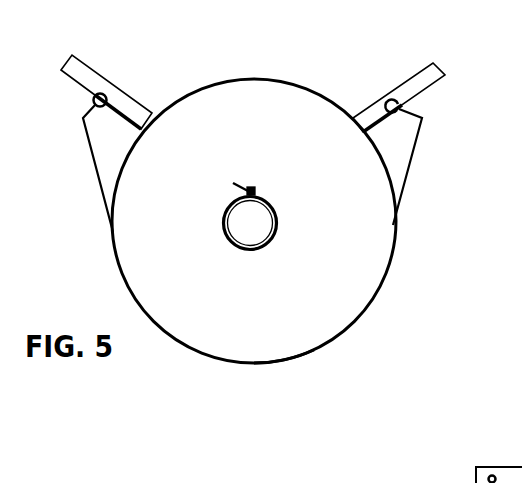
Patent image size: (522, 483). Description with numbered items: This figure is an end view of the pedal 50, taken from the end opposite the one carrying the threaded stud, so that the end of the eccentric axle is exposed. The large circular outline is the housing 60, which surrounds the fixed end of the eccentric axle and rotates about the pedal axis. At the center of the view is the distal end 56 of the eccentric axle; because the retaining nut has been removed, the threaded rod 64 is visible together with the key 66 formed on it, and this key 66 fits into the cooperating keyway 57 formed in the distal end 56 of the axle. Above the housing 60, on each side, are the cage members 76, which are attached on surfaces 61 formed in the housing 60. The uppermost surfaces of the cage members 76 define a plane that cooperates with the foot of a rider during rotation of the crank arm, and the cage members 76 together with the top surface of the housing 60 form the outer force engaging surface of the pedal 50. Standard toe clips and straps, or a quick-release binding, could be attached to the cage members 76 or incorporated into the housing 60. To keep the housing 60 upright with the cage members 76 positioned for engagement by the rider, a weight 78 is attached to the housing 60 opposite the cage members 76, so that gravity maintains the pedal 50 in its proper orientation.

The pedal 50 is at (324, 60).
The distal end 56 is at (353, 267).
The keyway 57 is at (256, 189).
The housing 60 is at (407, 151).
The surfaces 61 is at (96, 98).
The threaded rod 64 is at (278, 218).
The key 66 is at (224, 178).
The cage members 76 is at (89, 67).
The weight 78 is at (293, 364).